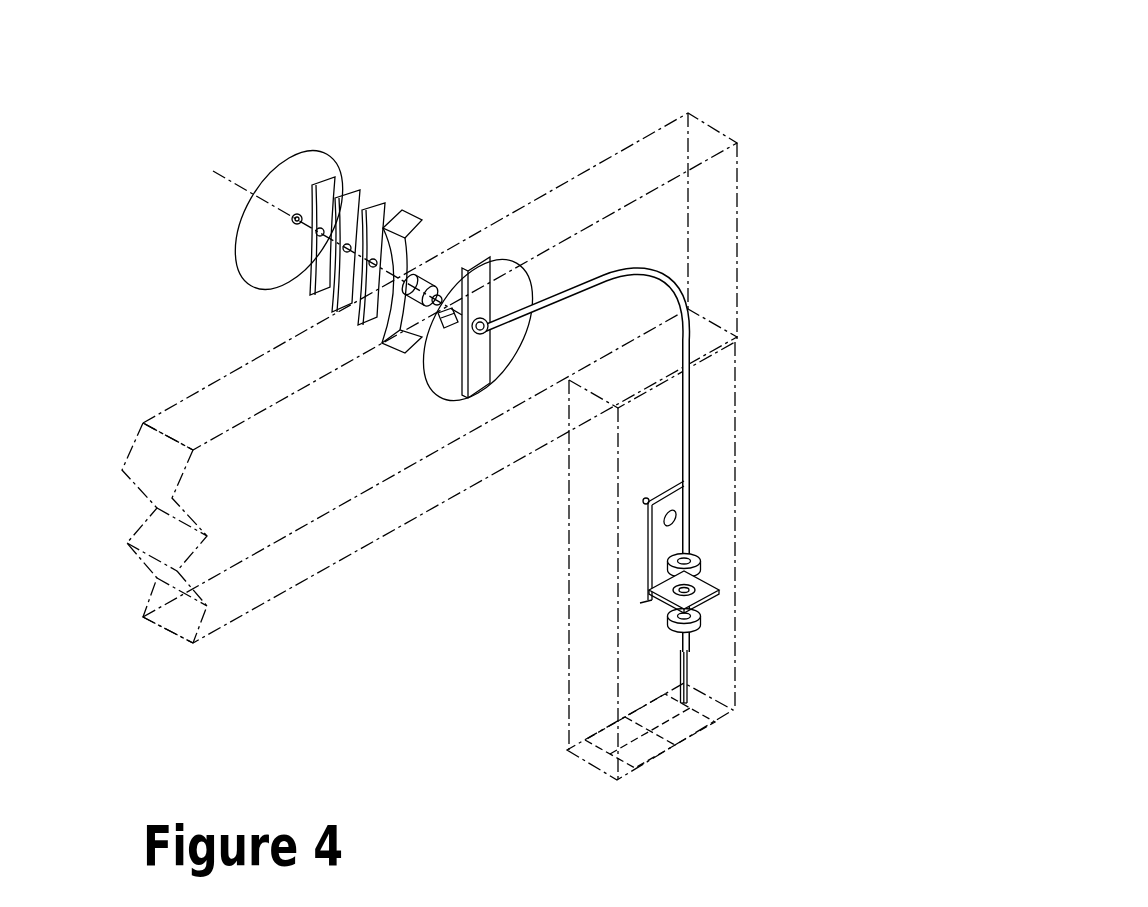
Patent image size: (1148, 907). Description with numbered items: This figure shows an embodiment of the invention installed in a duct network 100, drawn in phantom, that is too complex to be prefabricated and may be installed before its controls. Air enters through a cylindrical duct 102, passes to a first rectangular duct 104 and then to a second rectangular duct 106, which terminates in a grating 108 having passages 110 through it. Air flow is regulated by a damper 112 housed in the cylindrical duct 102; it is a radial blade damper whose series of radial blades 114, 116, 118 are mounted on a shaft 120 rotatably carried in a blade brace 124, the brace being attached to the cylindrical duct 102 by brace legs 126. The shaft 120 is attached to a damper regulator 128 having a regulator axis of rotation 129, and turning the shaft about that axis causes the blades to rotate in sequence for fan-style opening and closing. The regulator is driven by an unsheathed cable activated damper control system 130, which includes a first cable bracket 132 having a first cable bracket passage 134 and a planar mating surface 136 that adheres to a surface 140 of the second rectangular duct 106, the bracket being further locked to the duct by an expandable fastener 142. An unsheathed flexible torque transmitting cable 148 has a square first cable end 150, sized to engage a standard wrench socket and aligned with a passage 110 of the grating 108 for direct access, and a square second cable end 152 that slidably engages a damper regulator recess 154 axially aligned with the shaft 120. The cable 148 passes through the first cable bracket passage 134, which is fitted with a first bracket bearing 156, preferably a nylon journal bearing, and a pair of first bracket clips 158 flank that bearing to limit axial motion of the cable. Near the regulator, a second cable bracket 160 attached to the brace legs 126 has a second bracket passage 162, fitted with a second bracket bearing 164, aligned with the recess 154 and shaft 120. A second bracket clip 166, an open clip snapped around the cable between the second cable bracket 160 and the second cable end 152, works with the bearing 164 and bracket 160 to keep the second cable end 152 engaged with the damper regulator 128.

The duct network 100 is at (603, 86).
The cylindrical duct 102 is at (289, 292).
The first rectangular duct 104 is at (333, 563).
The second rectangular duct 106 is at (739, 661).
The grating 108 is at (678, 744).
The passages 110 is at (595, 752).
The damper 112 is at (392, 98).
The radial blade 114 is at (318, 290).
The radial blade 116 is at (338, 298).
The radial blade 118 is at (374, 318).
The shaft 120 is at (420, 260).
The blade brace 124 is at (372, 307).
The brace legs 126 is at (408, 258).
The damper regulator 128 is at (452, 309).
The regulator axis of rotation 129 is at (237, 184).
The unsheathed cable activated damper control system 130 is at (739, 305).
The first cable bracket 132 is at (643, 602).
The first cable bracket passage 134 is at (712, 578).
The planar mating surface 136 is at (648, 555).
The surface 140 is at (583, 495).
The expandable fastener 142 is at (668, 520).
The unsheathed flexible torque transmitting cable 148 is at (672, 289).
The first cable end 150 is at (690, 692).
The second cable end 152 is at (492, 285).
The damper regulator recess 154 is at (385, 360).
The first bracket bearing 156 is at (719, 588).
The first bracket clips 158 is at (694, 561).
The second cable bracket 160 is at (473, 357).
The second bracket passage 162 is at (490, 320).
The second bracket bearing 164 is at (489, 329).
The second bracket clip 166 is at (460, 340).